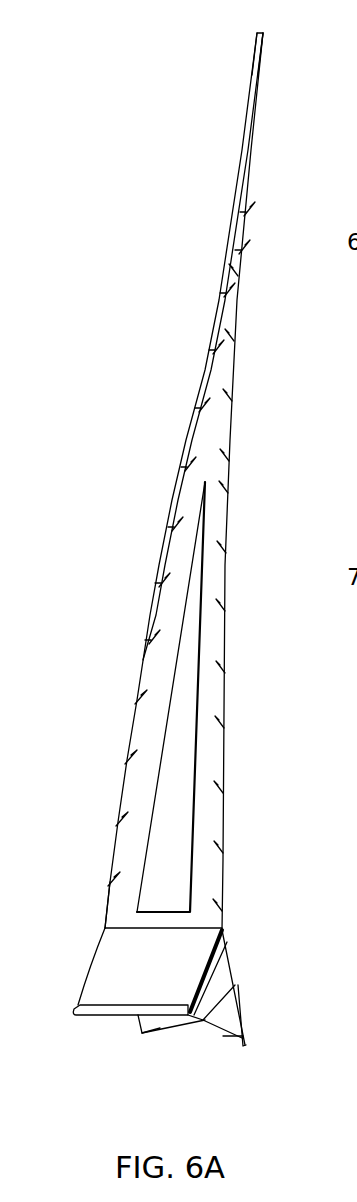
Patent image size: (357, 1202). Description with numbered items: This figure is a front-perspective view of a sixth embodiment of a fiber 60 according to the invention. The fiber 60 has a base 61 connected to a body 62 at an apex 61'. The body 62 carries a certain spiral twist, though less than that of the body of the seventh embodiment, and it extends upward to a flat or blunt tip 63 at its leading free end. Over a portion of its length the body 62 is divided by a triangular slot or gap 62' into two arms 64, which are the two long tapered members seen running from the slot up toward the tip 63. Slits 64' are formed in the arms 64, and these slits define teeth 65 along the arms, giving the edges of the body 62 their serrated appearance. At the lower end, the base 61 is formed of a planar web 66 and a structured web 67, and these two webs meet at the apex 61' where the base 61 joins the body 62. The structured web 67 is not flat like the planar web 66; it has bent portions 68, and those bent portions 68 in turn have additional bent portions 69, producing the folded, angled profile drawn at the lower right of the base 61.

The fiber 60 is at (144, 321).
The base 61 is at (118, 966).
The apex 61' is at (72, 903).
The body 62 is at (213, 700).
The triangular slot 62' is at (114, 697).
The tip 63 is at (263, 34).
The arms 64 is at (181, 556).
The slits 64' is at (255, 557).
The teeth 65 is at (158, 552).
The planar web 66 is at (108, 996).
The structured web 67 is at (226, 967).
The bent portions 68 is at (233, 1010).
The additional bent portions 69 is at (243, 1043).